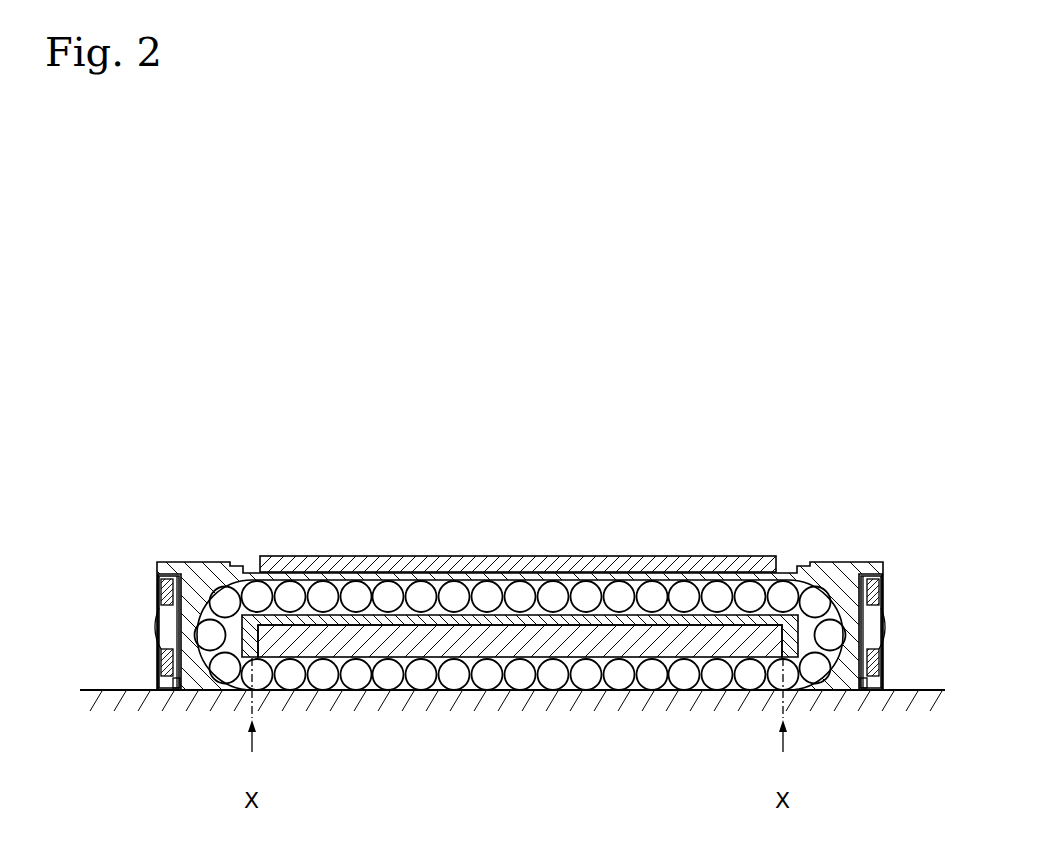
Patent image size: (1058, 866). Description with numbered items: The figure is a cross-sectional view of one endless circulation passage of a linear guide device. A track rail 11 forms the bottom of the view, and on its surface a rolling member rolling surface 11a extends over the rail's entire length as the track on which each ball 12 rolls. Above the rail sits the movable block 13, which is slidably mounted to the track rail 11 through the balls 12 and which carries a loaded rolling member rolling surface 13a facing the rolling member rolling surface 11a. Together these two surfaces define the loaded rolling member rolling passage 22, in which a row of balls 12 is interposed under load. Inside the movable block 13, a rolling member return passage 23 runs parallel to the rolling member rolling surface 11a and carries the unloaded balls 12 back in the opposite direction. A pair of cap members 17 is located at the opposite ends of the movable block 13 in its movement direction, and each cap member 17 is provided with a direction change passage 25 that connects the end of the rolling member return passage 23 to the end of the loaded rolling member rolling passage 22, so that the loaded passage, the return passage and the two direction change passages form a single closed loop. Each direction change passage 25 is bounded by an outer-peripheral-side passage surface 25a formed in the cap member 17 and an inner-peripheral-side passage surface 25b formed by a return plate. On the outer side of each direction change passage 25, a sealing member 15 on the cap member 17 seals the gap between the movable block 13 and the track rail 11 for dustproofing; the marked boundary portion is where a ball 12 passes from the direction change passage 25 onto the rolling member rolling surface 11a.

The track rail 11 is at (902, 686).
The rolling member rolling surface 11a is at (365, 693).
The ball 12 is at (556, 683).
The movable block 13 is at (765, 544).
The loaded rolling member rolling surface 13a is at (455, 668).
The sealing member 15 is at (162, 655).
The cap member 17 is at (187, 562).
The loaded rolling member rolling passage 22 is at (697, 702).
The rolling member return passage 23 is at (500, 597).
The direction change passage 25 is at (200, 600).
The outer-peripheral-side passage surface 25a is at (162, 592).
The inner-peripheral-side passage surface 25b is at (183, 680).